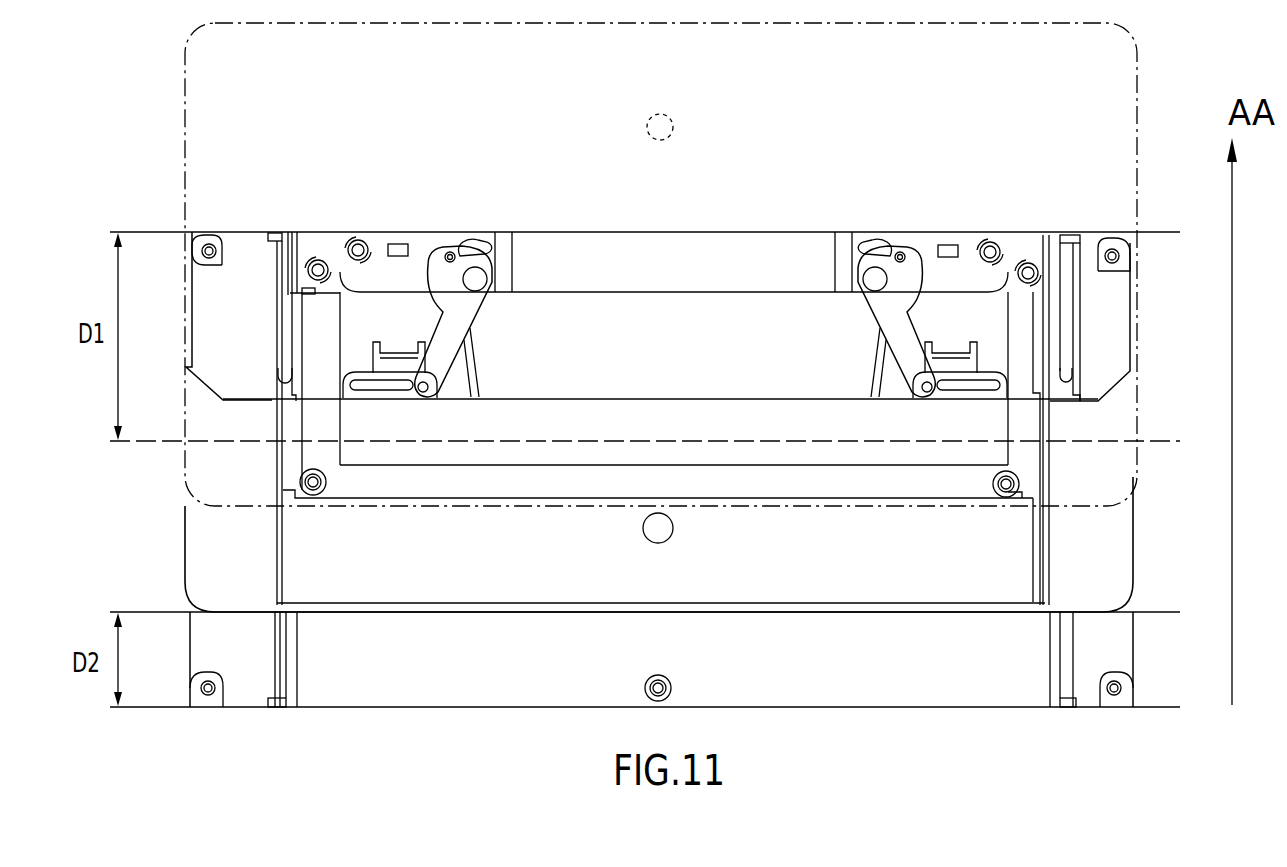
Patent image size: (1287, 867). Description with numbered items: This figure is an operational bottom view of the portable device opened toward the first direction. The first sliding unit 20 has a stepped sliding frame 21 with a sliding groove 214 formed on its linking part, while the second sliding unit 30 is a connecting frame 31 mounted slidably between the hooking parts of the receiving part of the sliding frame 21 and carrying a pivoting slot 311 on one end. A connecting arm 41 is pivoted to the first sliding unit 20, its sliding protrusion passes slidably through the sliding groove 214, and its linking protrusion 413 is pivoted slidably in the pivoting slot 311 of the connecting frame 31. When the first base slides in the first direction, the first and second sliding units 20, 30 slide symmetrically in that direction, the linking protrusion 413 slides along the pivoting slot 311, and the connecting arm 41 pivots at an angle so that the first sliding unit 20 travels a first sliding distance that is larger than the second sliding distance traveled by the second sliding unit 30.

The first sliding unit 20 is at (484, 210).
The sliding frame 21 is at (715, 248).
The sliding groove 214 is at (473, 245).
The connecting arm 41 is at (447, 280).
The linking protrusion 413 is at (433, 383).
The pivoting slot 311 is at (390, 385).
The second sliding unit 30 is at (398, 593).
The connecting frame 31 is at (503, 595).